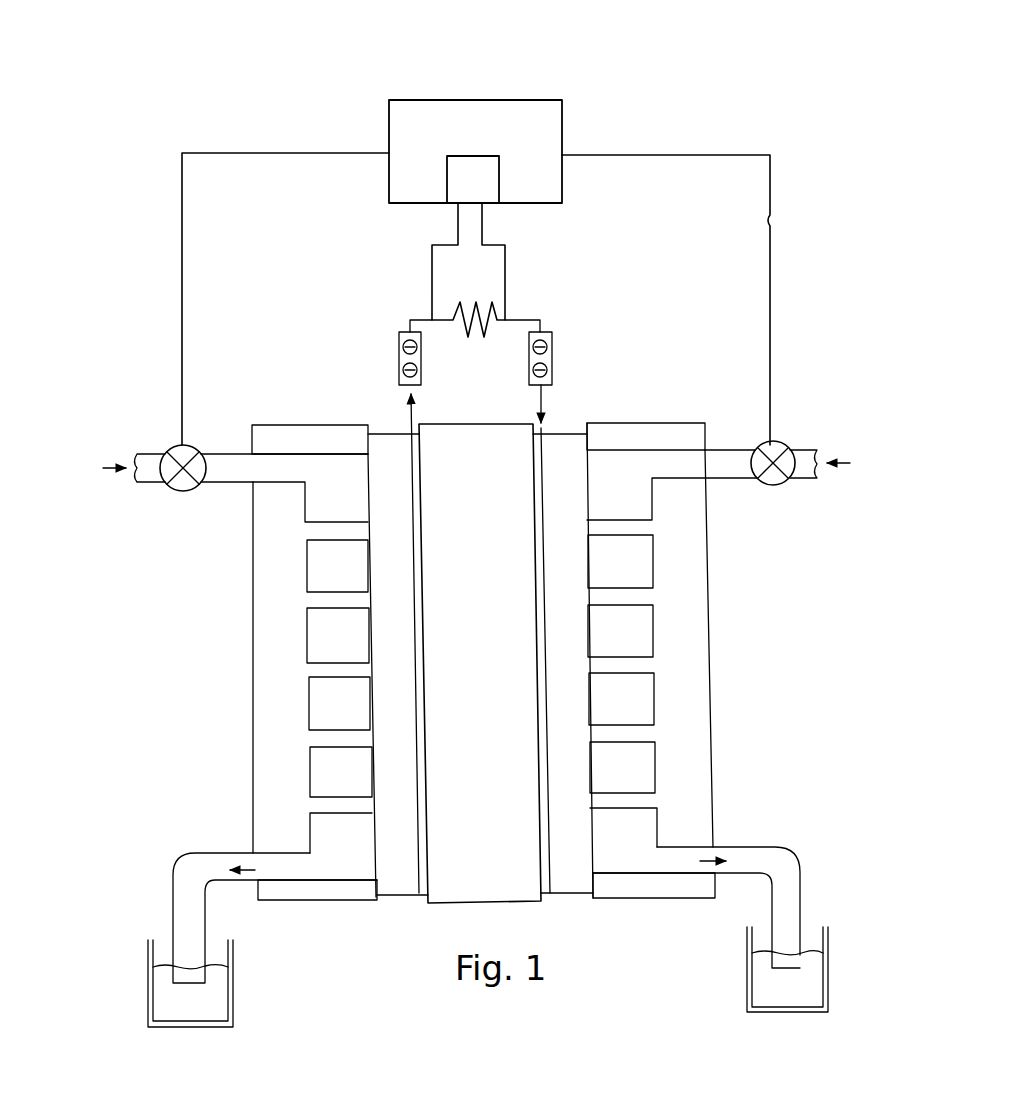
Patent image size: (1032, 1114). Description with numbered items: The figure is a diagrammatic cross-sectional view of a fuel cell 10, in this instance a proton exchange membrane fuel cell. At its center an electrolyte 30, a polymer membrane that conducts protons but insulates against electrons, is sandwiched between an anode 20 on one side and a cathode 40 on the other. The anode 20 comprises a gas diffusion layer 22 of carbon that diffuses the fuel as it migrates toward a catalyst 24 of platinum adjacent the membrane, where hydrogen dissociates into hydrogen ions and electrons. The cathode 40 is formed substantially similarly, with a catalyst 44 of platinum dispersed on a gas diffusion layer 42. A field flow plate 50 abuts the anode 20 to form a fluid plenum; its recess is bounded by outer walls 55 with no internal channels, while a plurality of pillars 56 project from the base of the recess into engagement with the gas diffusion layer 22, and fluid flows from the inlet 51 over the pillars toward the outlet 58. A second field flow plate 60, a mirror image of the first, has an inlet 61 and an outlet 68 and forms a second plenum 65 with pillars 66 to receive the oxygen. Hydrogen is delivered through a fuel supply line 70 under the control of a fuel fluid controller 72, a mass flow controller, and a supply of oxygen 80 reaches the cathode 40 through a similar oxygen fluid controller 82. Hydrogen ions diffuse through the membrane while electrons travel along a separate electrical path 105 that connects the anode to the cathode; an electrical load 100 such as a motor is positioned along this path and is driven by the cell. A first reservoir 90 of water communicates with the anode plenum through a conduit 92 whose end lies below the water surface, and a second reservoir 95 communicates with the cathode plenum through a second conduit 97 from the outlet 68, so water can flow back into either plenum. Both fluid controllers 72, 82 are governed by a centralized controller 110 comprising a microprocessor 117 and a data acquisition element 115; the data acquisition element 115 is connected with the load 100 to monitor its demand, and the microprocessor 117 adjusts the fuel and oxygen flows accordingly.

The fuel cell 10 is at (212, 701).
The anode 20 is at (393, 898).
The gas diffusion layer 22 is at (400, 875).
The catalyst 24 is at (423, 836).
The electrolyte 30 is at (500, 668).
The cathode 40 is at (567, 896).
The gas diffusion layer 42 is at (558, 797).
The catalyst 44 is at (542, 751).
The field flow plate 50 is at (251, 635).
The inlet 51 is at (248, 452).
The outer walls 55 is at (356, 580).
The pillars 56 is at (328, 533).
The outlet 58 is at (258, 854).
The second field flow plate 60 is at (716, 778).
The inlet 61 is at (722, 450).
The second plenum 65 is at (642, 784).
The pillars 66 is at (610, 733).
The outlet 68 is at (712, 848).
The fuel supply line 70 is at (207, 482).
The fuel fluid controller 72 is at (173, 450).
The supply of oxygen 80 is at (731, 478).
The oxygen fluid controller 82 is at (780, 446).
The first reservoir 90 is at (160, 999).
The conduit 92 is at (178, 898).
The second reservoir 95 is at (815, 985).
The second conduit 97 is at (795, 905).
The electrical load 100 is at (466, 336).
The electrical path 105 is at (533, 319).
The centralized controller 110 is at (503, 96).
The data acquisition element 115 is at (490, 196).
The microprocessor 117 is at (486, 140).